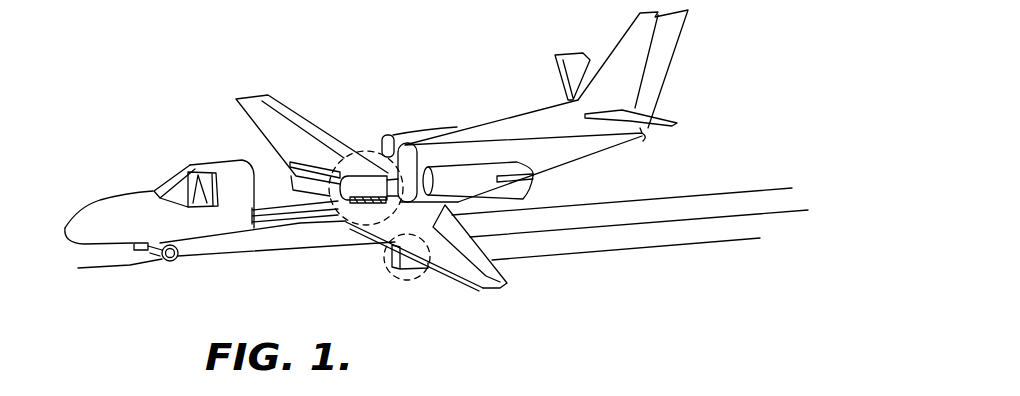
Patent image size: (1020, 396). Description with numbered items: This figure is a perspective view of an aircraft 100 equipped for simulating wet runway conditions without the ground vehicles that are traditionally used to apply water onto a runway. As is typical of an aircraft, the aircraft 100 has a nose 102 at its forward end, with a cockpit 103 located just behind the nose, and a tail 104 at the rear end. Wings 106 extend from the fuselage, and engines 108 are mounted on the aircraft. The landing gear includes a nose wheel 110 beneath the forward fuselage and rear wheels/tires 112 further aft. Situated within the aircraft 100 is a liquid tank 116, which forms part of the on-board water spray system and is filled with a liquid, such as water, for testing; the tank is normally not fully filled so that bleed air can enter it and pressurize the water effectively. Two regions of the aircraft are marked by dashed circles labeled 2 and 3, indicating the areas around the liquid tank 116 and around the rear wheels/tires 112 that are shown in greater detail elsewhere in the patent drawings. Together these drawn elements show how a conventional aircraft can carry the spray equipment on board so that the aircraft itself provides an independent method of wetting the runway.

The aircraft 100 is at (571, 286).
The nose 102 is at (87, 210).
The cockpit 103 is at (166, 186).
The tail 104 is at (642, 133).
The wings 106 is at (290, 112).
The engines 108 is at (473, 170).
The nose wheel 110 is at (170, 262).
The rear wheels/tires 112 is at (388, 260).
The liquid tank 116 is at (334, 163).
The detail region of FIG. 2 is at (386, 149).
The detail region of FIG. 3 is at (397, 280).